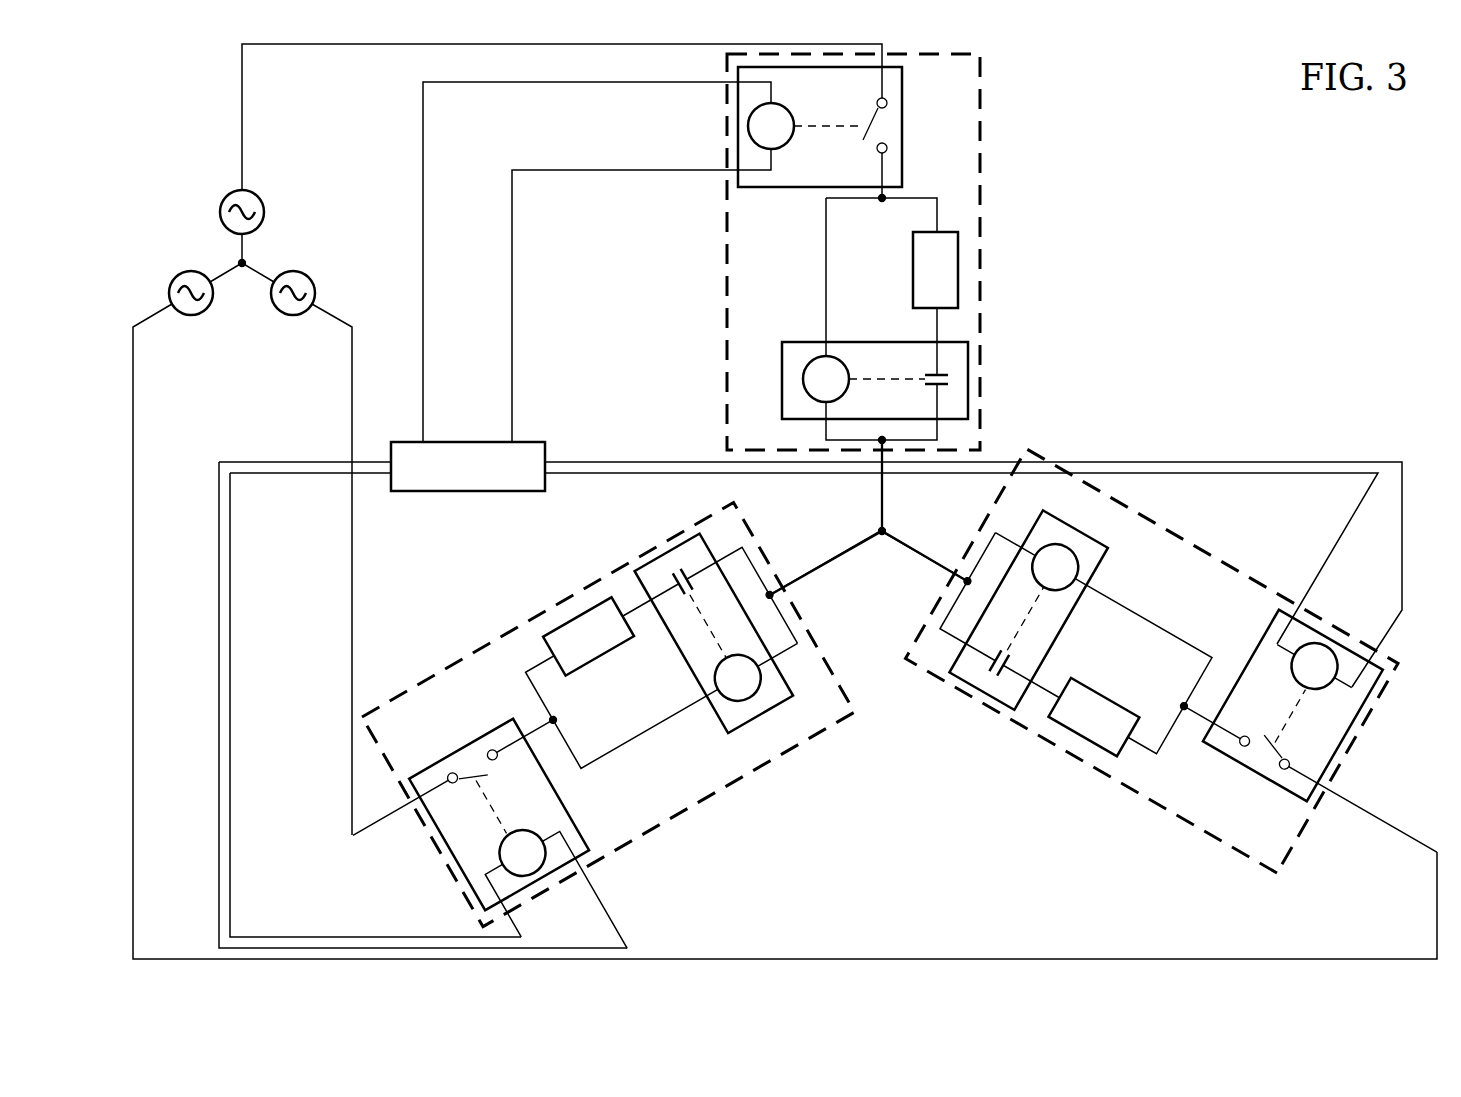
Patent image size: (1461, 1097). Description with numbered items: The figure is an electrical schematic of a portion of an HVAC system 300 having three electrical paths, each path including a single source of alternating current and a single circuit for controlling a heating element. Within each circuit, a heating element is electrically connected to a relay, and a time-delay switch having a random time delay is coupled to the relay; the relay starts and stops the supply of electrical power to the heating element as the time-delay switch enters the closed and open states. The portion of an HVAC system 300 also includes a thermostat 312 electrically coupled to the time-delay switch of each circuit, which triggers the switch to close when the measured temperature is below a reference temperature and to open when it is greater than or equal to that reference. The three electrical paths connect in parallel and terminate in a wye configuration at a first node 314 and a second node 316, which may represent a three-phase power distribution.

The portion of an HVAC system 300 is at (1214, 178).
The thermostat 312 is at (489, 481).
The first node 314 is at (238, 260).
The second node 316 is at (880, 538).